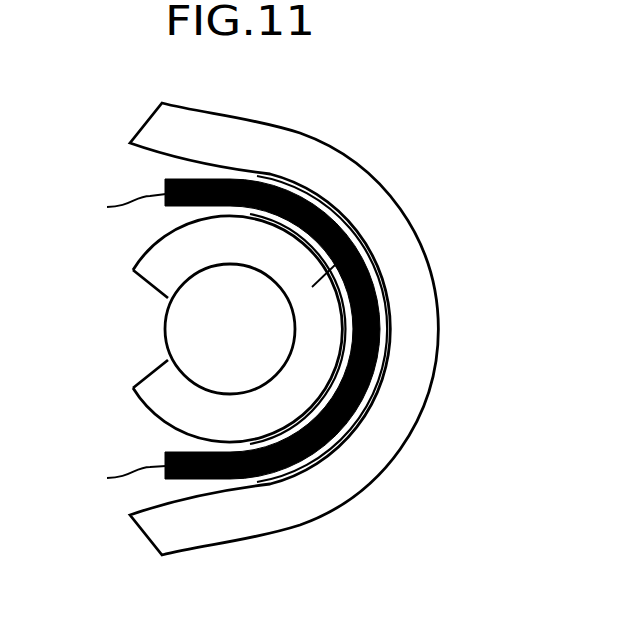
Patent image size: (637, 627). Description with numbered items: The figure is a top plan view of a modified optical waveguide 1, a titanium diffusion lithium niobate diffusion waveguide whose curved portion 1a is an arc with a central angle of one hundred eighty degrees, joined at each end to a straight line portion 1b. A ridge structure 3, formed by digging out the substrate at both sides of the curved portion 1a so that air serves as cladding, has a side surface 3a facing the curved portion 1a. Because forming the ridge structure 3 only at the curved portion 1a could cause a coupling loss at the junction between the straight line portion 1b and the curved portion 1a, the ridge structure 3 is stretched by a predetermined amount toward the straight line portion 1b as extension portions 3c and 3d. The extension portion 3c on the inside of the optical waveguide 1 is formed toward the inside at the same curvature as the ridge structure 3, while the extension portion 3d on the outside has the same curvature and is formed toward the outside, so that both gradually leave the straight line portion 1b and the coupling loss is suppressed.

The optical waveguide 1 is at (88, 153).
The curved portion 1a is at (332, 440).
The straight line portion 1b is at (119, 345).
The ridge structure 3 is at (358, 249).
The side surface 3a is at (380, 313).
The extension portion 3c is at (157, 270).
The extension portion 3d is at (197, 127).